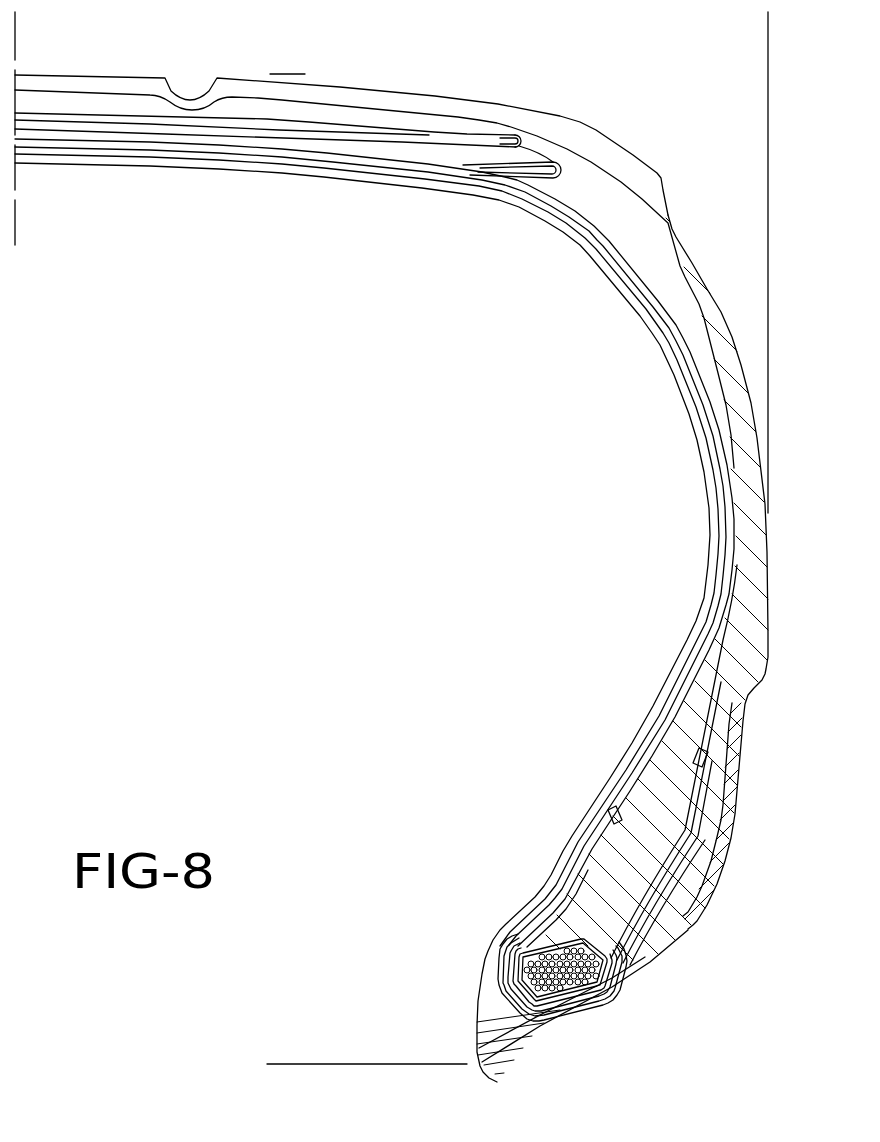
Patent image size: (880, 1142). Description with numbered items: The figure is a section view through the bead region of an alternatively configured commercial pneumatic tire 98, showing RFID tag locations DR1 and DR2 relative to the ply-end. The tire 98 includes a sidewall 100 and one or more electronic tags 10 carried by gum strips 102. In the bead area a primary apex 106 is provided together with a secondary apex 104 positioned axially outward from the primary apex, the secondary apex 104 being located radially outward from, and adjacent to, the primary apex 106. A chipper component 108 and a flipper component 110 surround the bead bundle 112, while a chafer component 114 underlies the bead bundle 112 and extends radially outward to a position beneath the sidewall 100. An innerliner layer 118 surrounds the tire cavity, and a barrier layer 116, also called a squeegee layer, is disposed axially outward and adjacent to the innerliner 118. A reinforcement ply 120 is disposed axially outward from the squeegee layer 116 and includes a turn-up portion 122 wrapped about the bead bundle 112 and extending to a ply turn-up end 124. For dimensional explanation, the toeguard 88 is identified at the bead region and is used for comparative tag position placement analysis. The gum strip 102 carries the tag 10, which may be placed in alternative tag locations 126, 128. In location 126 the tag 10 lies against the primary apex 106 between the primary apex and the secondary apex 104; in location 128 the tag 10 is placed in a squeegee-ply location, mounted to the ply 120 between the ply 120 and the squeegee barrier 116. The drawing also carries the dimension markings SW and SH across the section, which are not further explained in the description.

The electronic tag 10 is at (706, 752).
The toeguard 88 is at (500, 1083).
The commercial pneumatic tire 98 is at (551, 589).
The sidewall 100 is at (762, 598).
The gum strip 102 is at (708, 787).
The secondary apex 104 is at (696, 853).
The primary apex 106 is at (651, 862).
The chipper component 108 is at (604, 998).
The flipper component 110 is at (564, 990).
The bead bundle 112 is at (536, 958).
The chafer component 114 is at (497, 1025).
The barrier layer 116 is at (713, 617).
The innerliner layer 118 is at (710, 583).
The reinforcement ply 120 is at (731, 546).
The turn-up portion 122 is at (614, 966).
The ply turn-up end 124 is at (684, 842).
The tag location 126 is at (696, 756).
The tag location 128 is at (613, 821).
The section width SW is at (768, 24).
The section height SH is at (288, 1064).
The RFID tag location DR1 is at (608, 807).
The RFID tag location DR2 is at (691, 753).